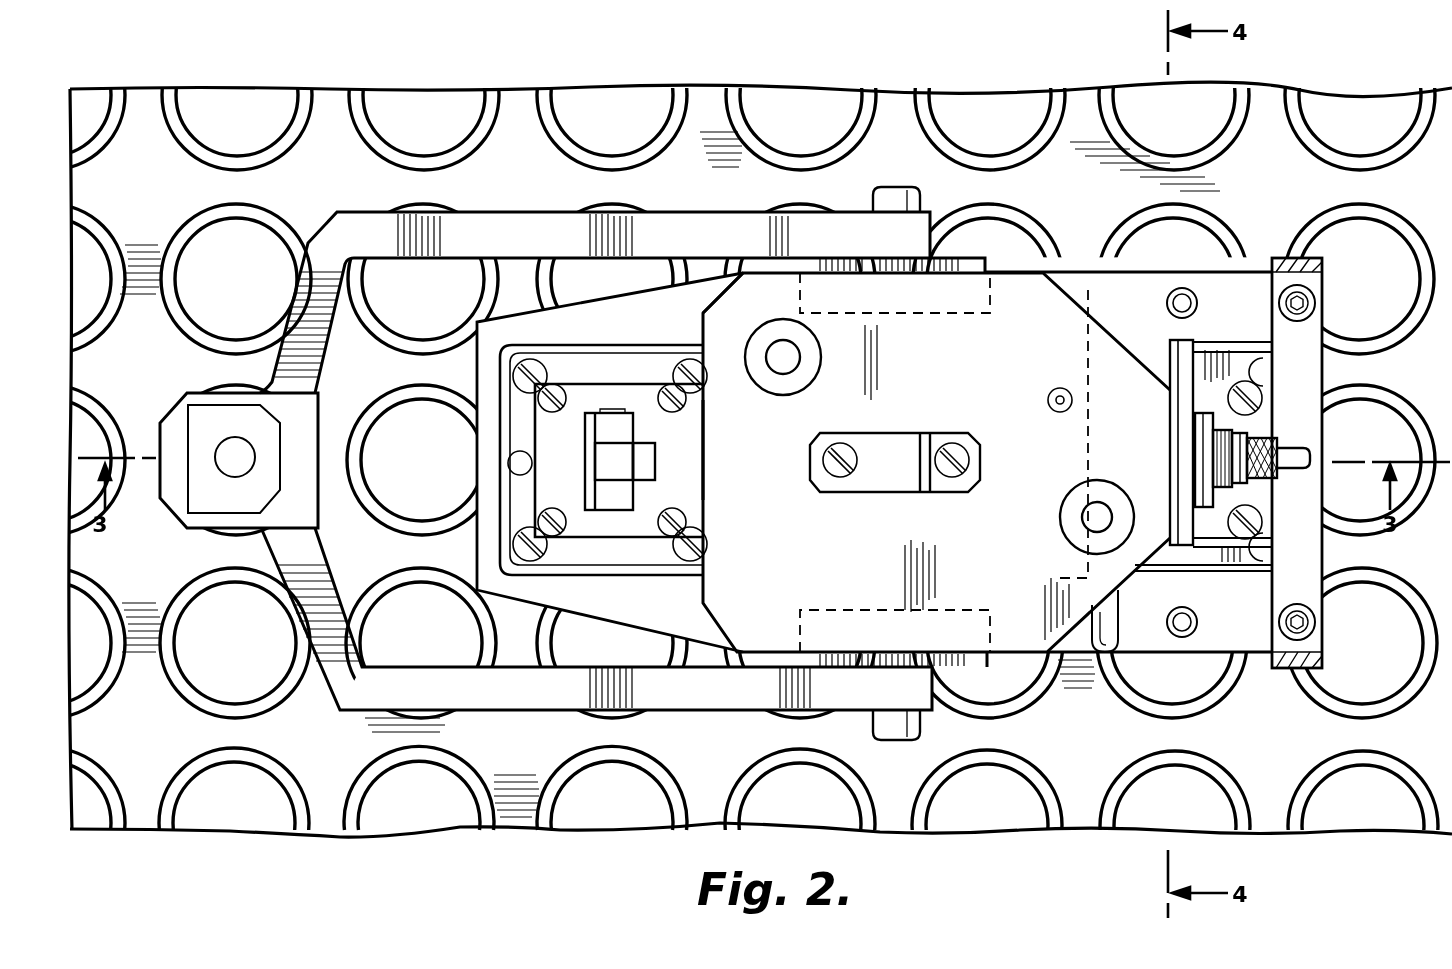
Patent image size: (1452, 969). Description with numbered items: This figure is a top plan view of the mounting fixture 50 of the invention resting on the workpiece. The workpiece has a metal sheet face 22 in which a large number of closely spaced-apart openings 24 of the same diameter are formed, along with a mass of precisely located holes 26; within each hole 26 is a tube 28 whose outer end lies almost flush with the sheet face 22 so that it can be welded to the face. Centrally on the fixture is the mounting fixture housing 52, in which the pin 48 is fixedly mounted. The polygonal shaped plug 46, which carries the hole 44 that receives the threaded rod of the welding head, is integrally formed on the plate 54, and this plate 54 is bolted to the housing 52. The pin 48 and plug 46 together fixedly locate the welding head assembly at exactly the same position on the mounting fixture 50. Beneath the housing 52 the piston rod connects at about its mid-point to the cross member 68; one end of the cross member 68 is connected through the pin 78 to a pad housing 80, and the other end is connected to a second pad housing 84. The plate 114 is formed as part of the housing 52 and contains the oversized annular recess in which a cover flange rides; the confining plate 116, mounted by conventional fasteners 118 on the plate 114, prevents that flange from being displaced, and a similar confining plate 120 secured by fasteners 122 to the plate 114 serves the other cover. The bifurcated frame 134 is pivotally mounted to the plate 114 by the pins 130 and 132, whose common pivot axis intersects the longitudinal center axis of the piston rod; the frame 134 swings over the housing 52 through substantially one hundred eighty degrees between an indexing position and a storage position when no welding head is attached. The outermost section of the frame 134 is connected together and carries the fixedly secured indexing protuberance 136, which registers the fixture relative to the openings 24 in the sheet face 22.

The sheet face 22 is at (332, 758).
The openings 24 is at (372, 812).
The holes 26 is at (357, 815).
The tube 28 is at (682, 820).
The hole 44 is at (897, 425).
The polygonal shaped plug 46 is at (888, 493).
The pin 48 is at (803, 360).
The mounting fixture 50 is at (1028, 724).
The mounting fixture housing 52 is at (1012, 640).
The plate 54 is at (975, 473).
The cross member 68 is at (745, 433).
The pin 78 is at (617, 512).
The pad housing 80 is at (557, 458).
The pad housing 84 is at (1253, 425).
The plate 114 is at (1087, 265).
The confining plate 116 is at (1238, 366).
The fasteners 118 is at (1273, 555).
The confining plate 120 is at (563, 372).
The fasteners 122 is at (513, 365).
The pin 130 is at (922, 194).
The pin 132 is at (909, 742).
The bifurcated frame 134 is at (727, 235).
The indexing protuberance 136 is at (225, 395).